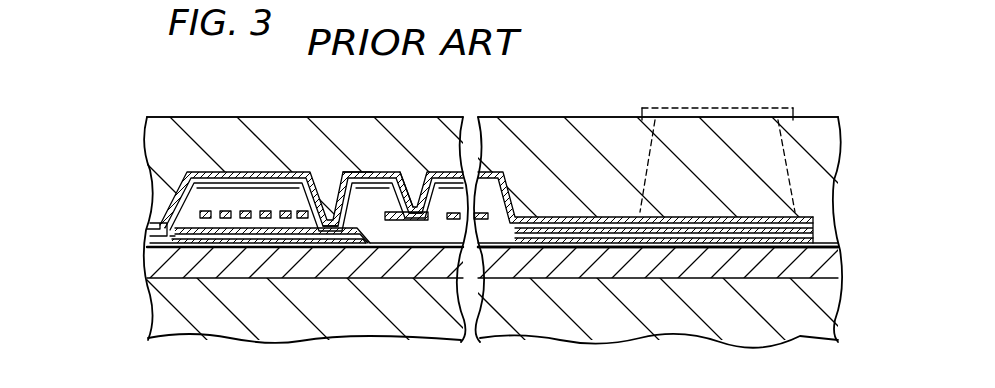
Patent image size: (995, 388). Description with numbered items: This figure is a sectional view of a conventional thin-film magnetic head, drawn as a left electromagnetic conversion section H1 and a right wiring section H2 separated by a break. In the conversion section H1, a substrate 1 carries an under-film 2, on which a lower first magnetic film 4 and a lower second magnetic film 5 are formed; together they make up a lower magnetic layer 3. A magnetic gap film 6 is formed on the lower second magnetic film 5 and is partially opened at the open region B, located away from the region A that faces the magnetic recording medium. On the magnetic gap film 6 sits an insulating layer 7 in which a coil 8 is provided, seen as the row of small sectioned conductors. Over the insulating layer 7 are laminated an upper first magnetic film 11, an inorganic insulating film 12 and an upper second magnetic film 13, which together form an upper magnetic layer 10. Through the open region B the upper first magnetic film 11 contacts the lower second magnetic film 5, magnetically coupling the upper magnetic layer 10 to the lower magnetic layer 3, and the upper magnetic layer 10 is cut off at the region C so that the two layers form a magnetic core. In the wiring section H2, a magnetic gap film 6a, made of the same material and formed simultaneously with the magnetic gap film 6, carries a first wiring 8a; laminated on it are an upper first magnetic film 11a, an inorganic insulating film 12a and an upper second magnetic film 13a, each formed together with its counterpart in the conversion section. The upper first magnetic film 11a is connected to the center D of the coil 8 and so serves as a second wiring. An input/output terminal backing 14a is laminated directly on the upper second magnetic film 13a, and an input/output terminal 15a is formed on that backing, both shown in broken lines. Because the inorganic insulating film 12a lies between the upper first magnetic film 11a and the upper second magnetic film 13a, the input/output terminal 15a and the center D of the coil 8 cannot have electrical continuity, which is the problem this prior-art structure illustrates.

The electromagnetic conversion section H1 is at (142, 130).
The wiring section H2 is at (848, 135).
The substrate 1 is at (234, 323).
The under-film 2 is at (374, 275).
The lower magnetic layer 3 is at (253, 256).
The lower first magnetic film 4 is at (203, 255).
The lower second magnetic film 5 is at (271, 234).
The magnetic gap film 6 is at (298, 235).
The magnetic gap film 6a is at (650, 245).
The insulating layer 7 is at (328, 218).
The coil 8 is at (273, 211).
The first wiring 8a is at (562, 245).
The upper magnetic layer 10 is at (241, 158).
The upper first magnetic film 11 is at (217, 185).
The upper first magnetic film 11a is at (660, 226).
The inorganic insulating film 12 is at (300, 192).
The inorganic insulating film 12a is at (583, 222).
The upper second magnetic film 13 is at (183, 172).
The upper second magnetic film 13a is at (522, 220).
The input/output terminal backing 14a is at (764, 151).
The input/output terminal 15a is at (732, 110).
The region facing the magnetic recording medium A is at (152, 225).
The open region B is at (333, 190).
The cut-off region C is at (390, 178).
The center of the coil D is at (419, 247).